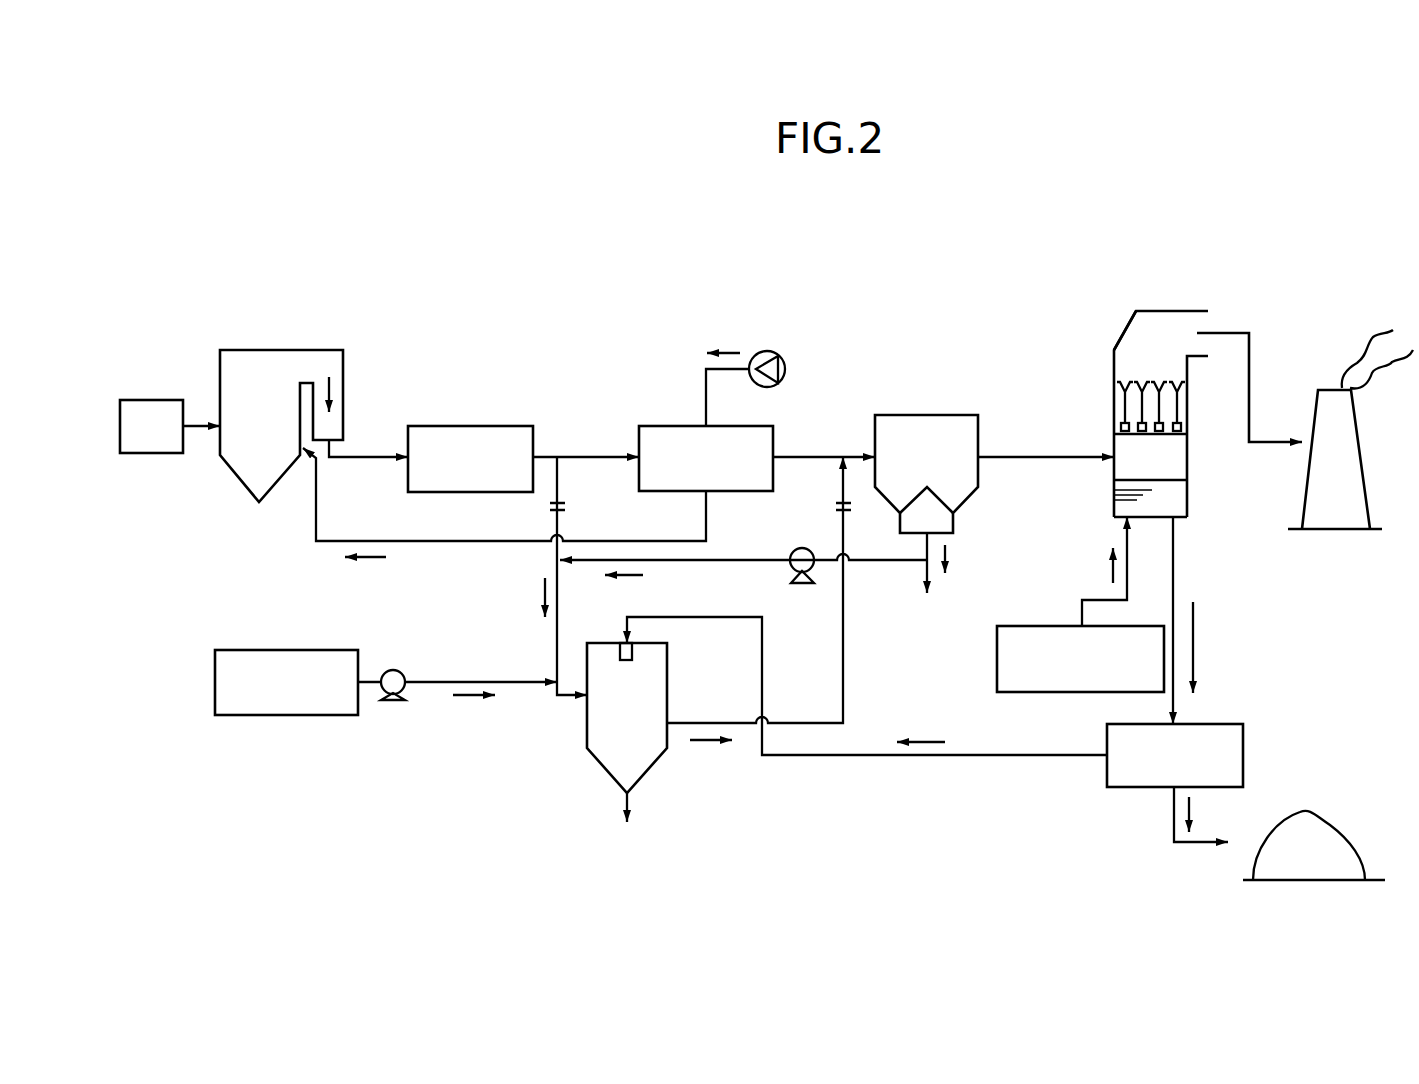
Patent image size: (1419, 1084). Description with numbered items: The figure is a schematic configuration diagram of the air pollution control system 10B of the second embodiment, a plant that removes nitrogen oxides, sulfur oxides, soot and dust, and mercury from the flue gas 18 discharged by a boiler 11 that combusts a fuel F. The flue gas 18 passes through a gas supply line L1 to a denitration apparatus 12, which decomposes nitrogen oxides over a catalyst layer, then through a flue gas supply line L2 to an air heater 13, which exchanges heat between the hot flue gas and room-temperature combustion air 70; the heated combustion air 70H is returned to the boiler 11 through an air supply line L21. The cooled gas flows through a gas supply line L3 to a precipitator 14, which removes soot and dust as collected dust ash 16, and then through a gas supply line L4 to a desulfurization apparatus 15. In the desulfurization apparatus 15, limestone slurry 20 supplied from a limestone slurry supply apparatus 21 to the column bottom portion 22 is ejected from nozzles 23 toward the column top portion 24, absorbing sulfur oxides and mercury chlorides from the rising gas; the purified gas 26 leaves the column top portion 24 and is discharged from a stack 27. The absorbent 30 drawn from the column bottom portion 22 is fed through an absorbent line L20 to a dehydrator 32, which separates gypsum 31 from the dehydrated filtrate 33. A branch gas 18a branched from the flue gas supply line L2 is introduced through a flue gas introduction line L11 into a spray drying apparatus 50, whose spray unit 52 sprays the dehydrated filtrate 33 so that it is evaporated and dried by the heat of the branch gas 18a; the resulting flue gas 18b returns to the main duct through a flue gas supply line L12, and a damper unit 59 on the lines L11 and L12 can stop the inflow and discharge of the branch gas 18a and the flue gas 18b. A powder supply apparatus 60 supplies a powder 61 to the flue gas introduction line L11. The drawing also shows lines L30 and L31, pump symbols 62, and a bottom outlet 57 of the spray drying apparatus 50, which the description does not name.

The air pollution control system 10B is at (553, 250).
The boiler 11 is at (243, 350).
The fuel F is at (155, 400).
The flue gas 18 is at (333, 395).
The denitration apparatus 12 is at (475, 426).
The gas supply line L1 is at (368, 462).
The flue gas supply line L2 is at (592, 457).
The gas supply line L3 is at (825, 457).
The gas supply line L4 is at (1047, 457).
The flue gas introduction line L11 is at (557, 636).
The flue gas supply line L12 is at (843, 668).
The absorbent line L20 is at (1176, 572).
The air supply line L21 is at (433, 541).
The powder supply line L30 is at (418, 682).
The dehydrated filtrate line L31 is at (697, 560).
The damper unit 59 is at (548, 506).
The combustion air 70H is at (366, 559).
The branch gas 18a is at (545, 590).
The flue gas 18b is at (705, 743).
The air heater 13 is at (745, 426).
The combustion air 70 is at (720, 348).
The precipitator 14 is at (930, 415).
The collected dust ash 16 is at (955, 548).
The pump 62 is at (802, 583).
The desulfurization apparatus 15 is at (1175, 311).
The column top portion 24 is at (1127, 322).
The nozzles 23 is at (1187, 425).
The column bottom portion 22 is at (1187, 495).
The limestone slurry 20 is at (1180, 513).
The purified gas 26 is at (1252, 372).
The stack 27 is at (1365, 455).
The powder supply apparatus 60 is at (300, 650).
The powder 61 is at (468, 697).
The spray drying apparatus 50 is at (578, 760).
The spray unit 52 is at (620, 648).
The solid particles 57 is at (622, 798).
The dehydrated filtrate 33 is at (922, 742).
The limestone slurry supply apparatus 21 is at (1045, 692).
The absorbent 30 is at (1195, 645).
The dehydrator 32 is at (1243, 752).
The gypsum 31 is at (1195, 813).